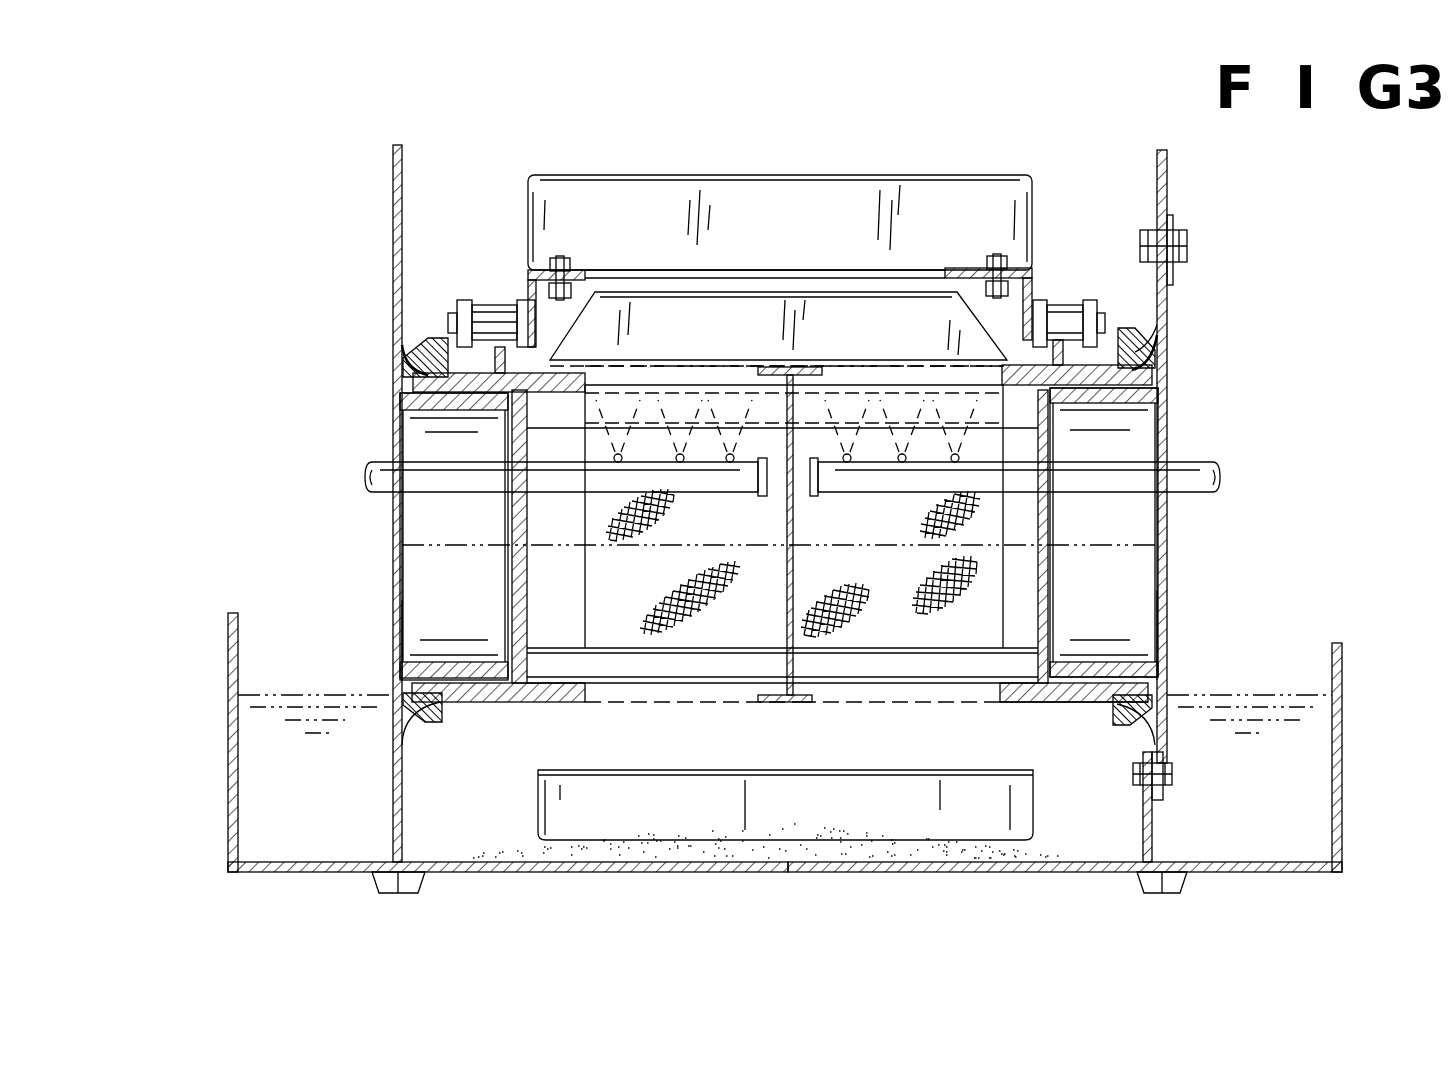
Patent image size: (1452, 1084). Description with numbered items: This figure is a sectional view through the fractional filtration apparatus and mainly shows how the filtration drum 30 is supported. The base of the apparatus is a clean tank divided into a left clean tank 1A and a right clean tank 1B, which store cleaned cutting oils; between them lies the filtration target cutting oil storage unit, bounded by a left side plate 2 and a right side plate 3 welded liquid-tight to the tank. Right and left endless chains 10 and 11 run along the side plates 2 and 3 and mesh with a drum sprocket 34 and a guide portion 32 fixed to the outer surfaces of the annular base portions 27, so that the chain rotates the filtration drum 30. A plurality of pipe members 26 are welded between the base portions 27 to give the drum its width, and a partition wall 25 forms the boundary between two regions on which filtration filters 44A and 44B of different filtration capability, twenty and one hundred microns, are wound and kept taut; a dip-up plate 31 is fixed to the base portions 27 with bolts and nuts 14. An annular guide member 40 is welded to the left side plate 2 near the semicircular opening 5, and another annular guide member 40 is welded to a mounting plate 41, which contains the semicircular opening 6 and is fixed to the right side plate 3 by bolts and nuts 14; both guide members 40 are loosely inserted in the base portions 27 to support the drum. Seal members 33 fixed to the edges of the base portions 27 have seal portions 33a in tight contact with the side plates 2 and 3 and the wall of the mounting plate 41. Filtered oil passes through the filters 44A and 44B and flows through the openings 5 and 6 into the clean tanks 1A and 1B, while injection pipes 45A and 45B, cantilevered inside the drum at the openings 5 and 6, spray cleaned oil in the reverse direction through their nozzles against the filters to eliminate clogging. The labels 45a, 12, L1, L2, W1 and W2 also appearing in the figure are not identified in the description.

The left clean tank 1A is at (270, 817).
The right clean tank 1B is at (1303, 812).
The left side plate 2 is at (393, 238).
The right side plate 3 is at (1167, 168).
The semicircular opening 5 is at (400, 637).
The semicircular opening 6 is at (1160, 613).
The endless chain 10 is at (510, 300).
The endless chain 11 is at (1060, 320).
The cover / drain pan 12 is at (797, 192).
The bolts and nuts 14 is at (996, 262).
The partition wall 25 is at (787, 615).
The pipe members 26 is at (882, 665).
The annular base portions 27 is at (535, 695).
The filtration drum 30 is at (1016, 710).
The dip-up plate 31 is at (662, 312).
The guide portion 32 is at (1157, 325).
The seal members 33 is at (425, 340).
The seal portions 33a is at (405, 360).
The drum sprocket 34 is at (498, 330).
The annular guide member 40 is at (413, 383).
The mounting plate 41 is at (1165, 420).
The filtration filter 44A is at (705, 702).
The filtration filter 44B is at (848, 366).
The injection pipe 45A is at (728, 468).
The injection pipe 45B is at (850, 468).
The spray nozzle 45a is at (618, 465).
The liquid level in chamber L1 is at (1100, 545).
The liquid level in tank L2 is at (305, 695).
The liquid flow direction W1 is at (393, 548).
The liquid flow direction W2 is at (1167, 548).